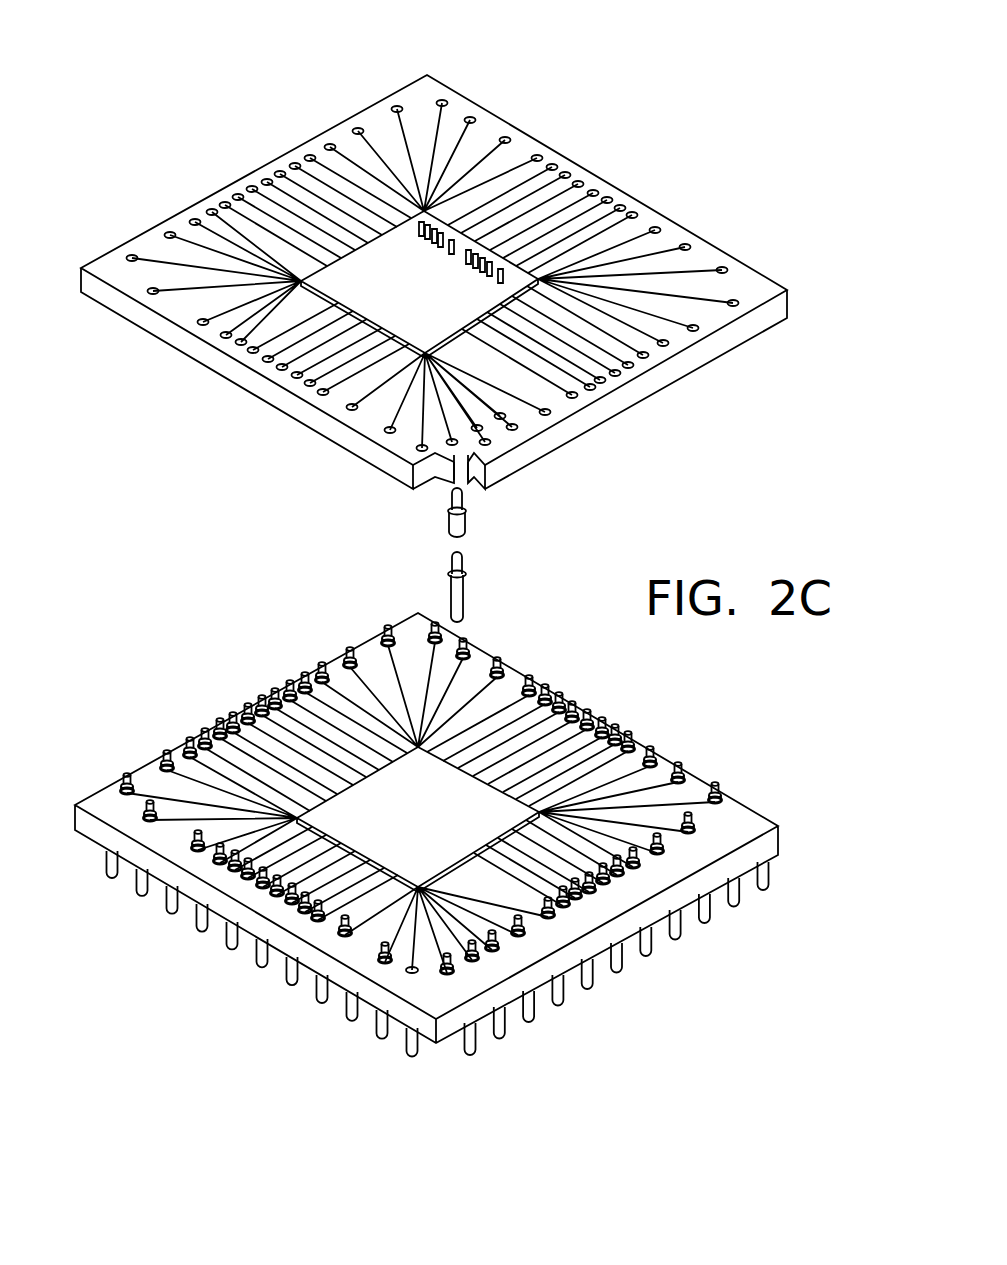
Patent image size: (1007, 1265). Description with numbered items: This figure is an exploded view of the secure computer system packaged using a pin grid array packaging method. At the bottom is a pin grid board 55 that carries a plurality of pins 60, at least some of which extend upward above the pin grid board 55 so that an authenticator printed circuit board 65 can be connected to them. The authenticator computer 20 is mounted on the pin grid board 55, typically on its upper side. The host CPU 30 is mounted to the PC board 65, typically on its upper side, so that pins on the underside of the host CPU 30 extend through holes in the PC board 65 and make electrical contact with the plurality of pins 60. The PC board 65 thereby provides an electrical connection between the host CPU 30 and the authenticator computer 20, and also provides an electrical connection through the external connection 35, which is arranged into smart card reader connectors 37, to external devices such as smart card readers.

The authenticator computer 20 is at (445, 825).
The host CPU 30 is at (365, 268).
The external connection 35 is at (480, 260).
The smart card reader connectors 37 is at (426, 178).
The pin grid board 55 is at (692, 856).
The pins 60 is at (465, 583).
The authenticator printed circuit board 65 is at (717, 322).